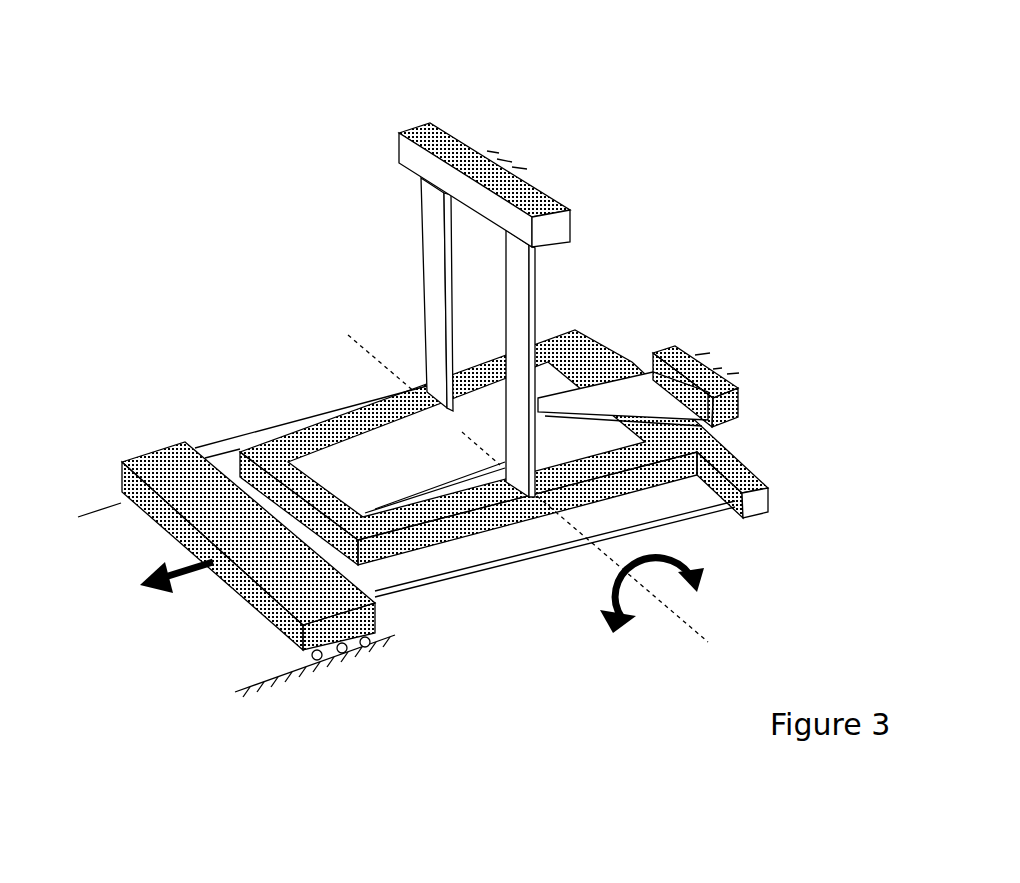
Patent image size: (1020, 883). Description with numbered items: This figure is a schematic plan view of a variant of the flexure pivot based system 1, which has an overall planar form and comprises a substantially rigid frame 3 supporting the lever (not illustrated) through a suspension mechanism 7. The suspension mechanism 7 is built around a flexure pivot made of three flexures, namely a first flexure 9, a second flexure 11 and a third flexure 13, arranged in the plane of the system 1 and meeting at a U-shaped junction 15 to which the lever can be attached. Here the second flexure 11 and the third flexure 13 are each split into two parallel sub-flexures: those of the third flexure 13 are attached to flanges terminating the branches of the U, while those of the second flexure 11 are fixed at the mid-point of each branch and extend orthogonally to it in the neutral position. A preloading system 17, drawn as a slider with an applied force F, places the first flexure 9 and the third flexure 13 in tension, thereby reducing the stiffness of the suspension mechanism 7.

The system 1 is at (764, 136).
The frame 3 is at (503, 160).
The suspension mechanism 7 is at (356, 219).
The first flexure 9 is at (642, 397).
The second flexure 11 is at (517, 258).
The third flexure 13 is at (246, 437).
The junction 15 is at (757, 522).
The preloading system 17 is at (28, 505).